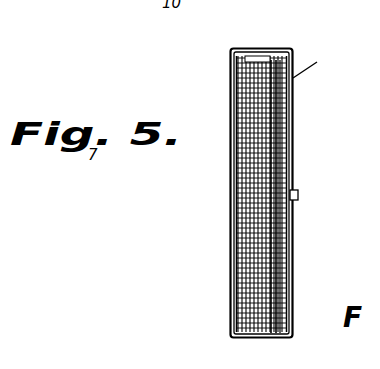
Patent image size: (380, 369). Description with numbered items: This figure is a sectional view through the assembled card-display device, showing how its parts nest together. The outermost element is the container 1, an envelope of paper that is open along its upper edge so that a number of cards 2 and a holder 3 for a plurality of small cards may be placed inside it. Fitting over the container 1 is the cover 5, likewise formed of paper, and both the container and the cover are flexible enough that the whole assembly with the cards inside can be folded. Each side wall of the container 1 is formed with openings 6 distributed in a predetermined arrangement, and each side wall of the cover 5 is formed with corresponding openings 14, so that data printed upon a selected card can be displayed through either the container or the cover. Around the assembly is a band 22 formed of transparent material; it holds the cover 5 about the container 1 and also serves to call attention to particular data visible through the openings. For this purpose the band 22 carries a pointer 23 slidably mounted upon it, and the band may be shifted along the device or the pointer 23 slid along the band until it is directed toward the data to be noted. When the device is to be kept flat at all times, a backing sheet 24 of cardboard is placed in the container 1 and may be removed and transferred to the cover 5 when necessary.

The container 1 is at (240, 60).
The cards 2 is at (258, 60).
The holder 3 is at (245, 220).
The cover 5 is at (240, 77).
The openings 6 is at (238, 118).
The openings 14 is at (291, 158).
The band 22 is at (236, 148).
The pointer 23 is at (298, 195).
The backing sheet 24 is at (293, 130).